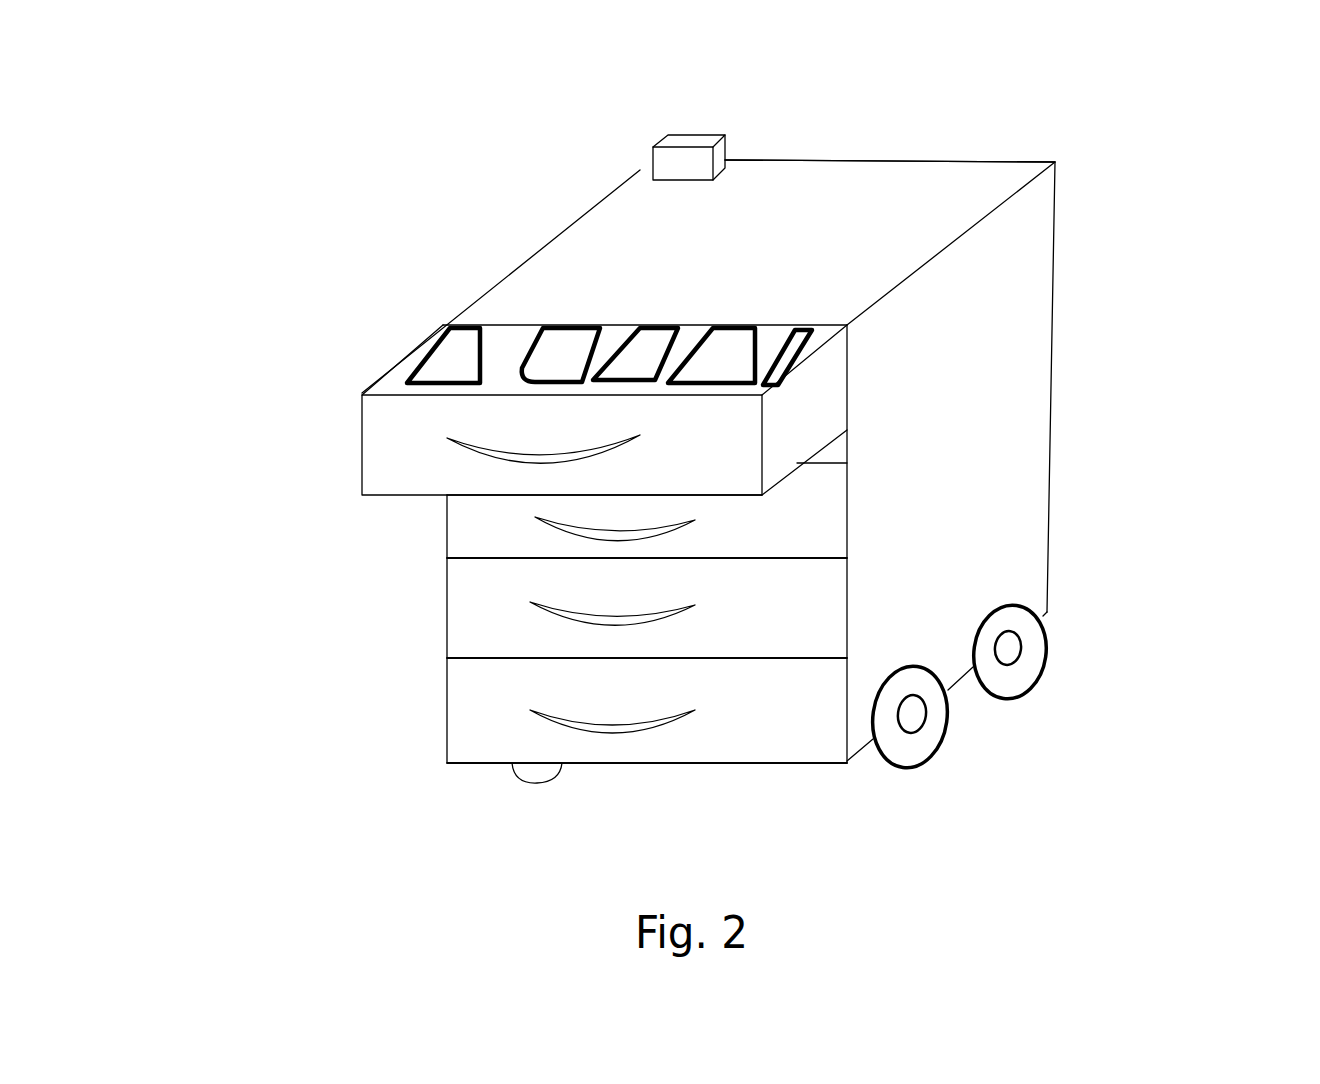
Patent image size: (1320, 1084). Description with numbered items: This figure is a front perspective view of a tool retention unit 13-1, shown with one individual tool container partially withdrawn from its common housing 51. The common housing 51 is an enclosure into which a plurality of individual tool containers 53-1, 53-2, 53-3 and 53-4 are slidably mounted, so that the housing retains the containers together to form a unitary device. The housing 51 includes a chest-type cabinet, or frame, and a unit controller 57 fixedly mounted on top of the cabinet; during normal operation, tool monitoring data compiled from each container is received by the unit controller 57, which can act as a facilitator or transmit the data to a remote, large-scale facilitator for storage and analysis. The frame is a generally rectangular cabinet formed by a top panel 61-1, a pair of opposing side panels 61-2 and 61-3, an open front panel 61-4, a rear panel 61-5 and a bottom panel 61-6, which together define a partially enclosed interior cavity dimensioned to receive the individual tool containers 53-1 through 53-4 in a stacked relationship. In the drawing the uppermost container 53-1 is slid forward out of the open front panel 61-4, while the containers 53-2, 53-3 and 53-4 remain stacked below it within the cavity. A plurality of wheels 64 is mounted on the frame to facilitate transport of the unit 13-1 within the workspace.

The tool retention unit 13-1 is at (701, 444).
The common housing 51 is at (701, 442).
The unit controller 57 is at (672, 130).
The top panel 61-1 is at (845, 180).
The side panel 61-2 is at (515, 268).
The side panel 61-3 is at (1023, 530).
The open front panel 61-4 is at (847, 495).
The rear panel 61-5 is at (1005, 160).
The bottom panel 61-6 is at (493, 762).
The individual tool container 53-1 is at (362, 433).
The individual tool container 53-2 is at (447, 520).
The individual tool container 53-3 is at (447, 607).
The individual tool container 53-4 is at (447, 703).
The wheels 64 is at (947, 723).